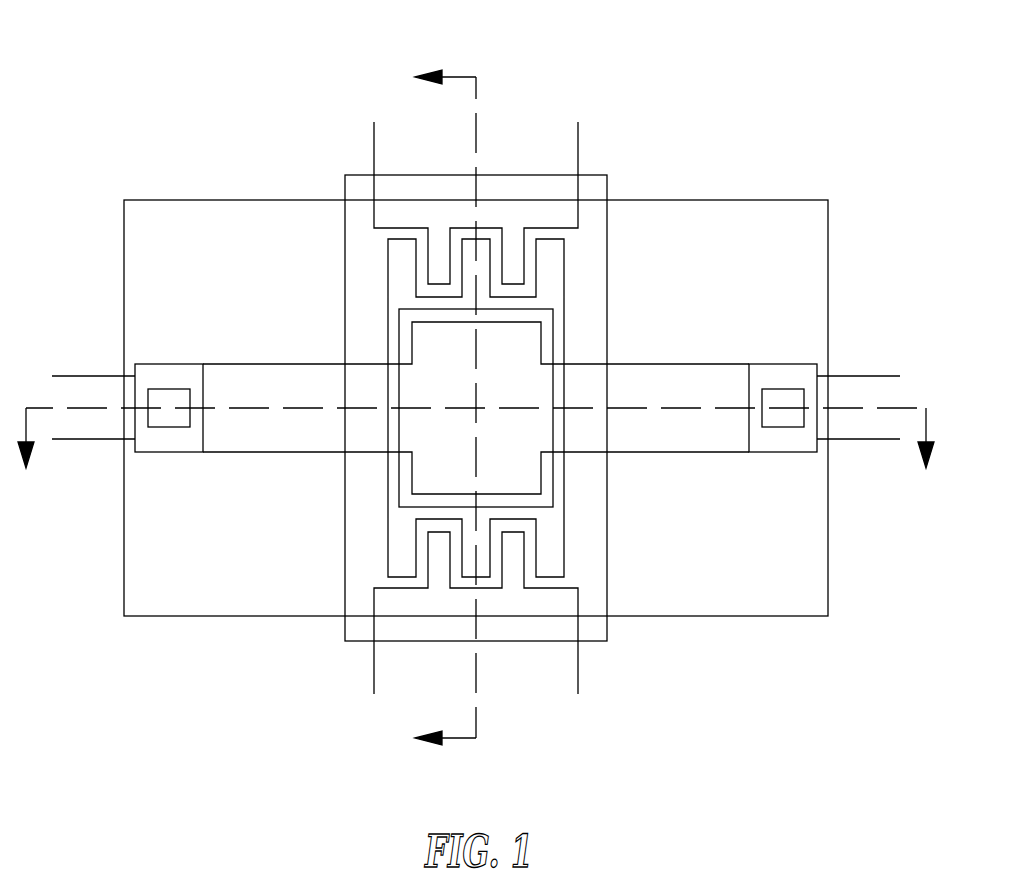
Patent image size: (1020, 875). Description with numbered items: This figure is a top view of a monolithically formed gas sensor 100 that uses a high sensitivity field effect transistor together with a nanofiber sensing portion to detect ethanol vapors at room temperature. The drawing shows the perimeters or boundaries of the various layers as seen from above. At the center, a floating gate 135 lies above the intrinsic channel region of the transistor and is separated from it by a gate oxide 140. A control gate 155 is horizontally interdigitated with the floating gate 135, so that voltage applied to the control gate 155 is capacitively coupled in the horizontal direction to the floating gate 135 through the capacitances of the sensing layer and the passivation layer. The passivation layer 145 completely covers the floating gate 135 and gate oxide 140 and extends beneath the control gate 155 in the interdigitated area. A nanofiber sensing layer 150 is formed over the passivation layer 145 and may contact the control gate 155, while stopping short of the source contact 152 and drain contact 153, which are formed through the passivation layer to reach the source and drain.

The gas sensor 100 is at (476, 397).
The floating gate 135 is at (565, 267).
The gate oxide 140 is at (553, 432).
The passivation layer 145 is at (829, 281).
The nanofiber sensing layer 150 is at (590, 174).
The source contact 152 is at (170, 388).
The drain contact 153 is at (783, 389).
The control gate 155 is at (579, 672).